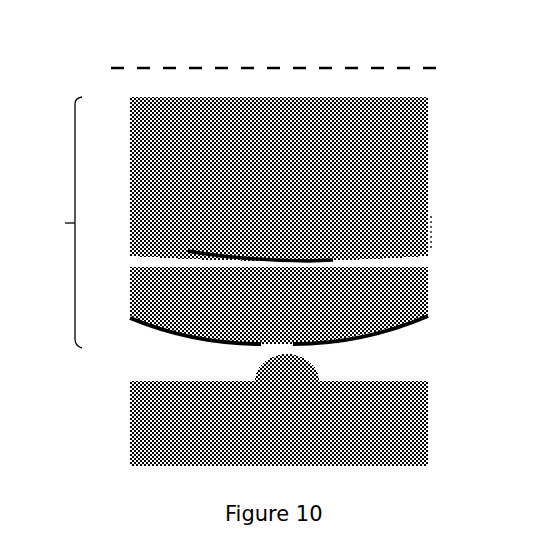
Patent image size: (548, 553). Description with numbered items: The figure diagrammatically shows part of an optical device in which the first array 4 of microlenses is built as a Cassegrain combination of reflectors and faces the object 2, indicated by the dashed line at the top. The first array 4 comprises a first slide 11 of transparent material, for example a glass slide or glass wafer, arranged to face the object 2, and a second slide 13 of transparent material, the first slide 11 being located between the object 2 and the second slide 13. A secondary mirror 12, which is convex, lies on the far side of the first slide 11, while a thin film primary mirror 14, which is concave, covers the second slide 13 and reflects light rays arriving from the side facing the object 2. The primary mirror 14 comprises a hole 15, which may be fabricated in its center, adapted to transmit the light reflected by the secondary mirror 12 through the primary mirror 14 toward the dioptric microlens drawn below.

The object 2 is at (213, 58).
The first array 4 is at (56, 240).
The first slide 11 is at (150, 154).
The secondary mirror 12 is at (180, 243).
The second slide 13 is at (160, 289).
The primary mirror 14 is at (183, 330).
The hole 15 is at (155, 470).